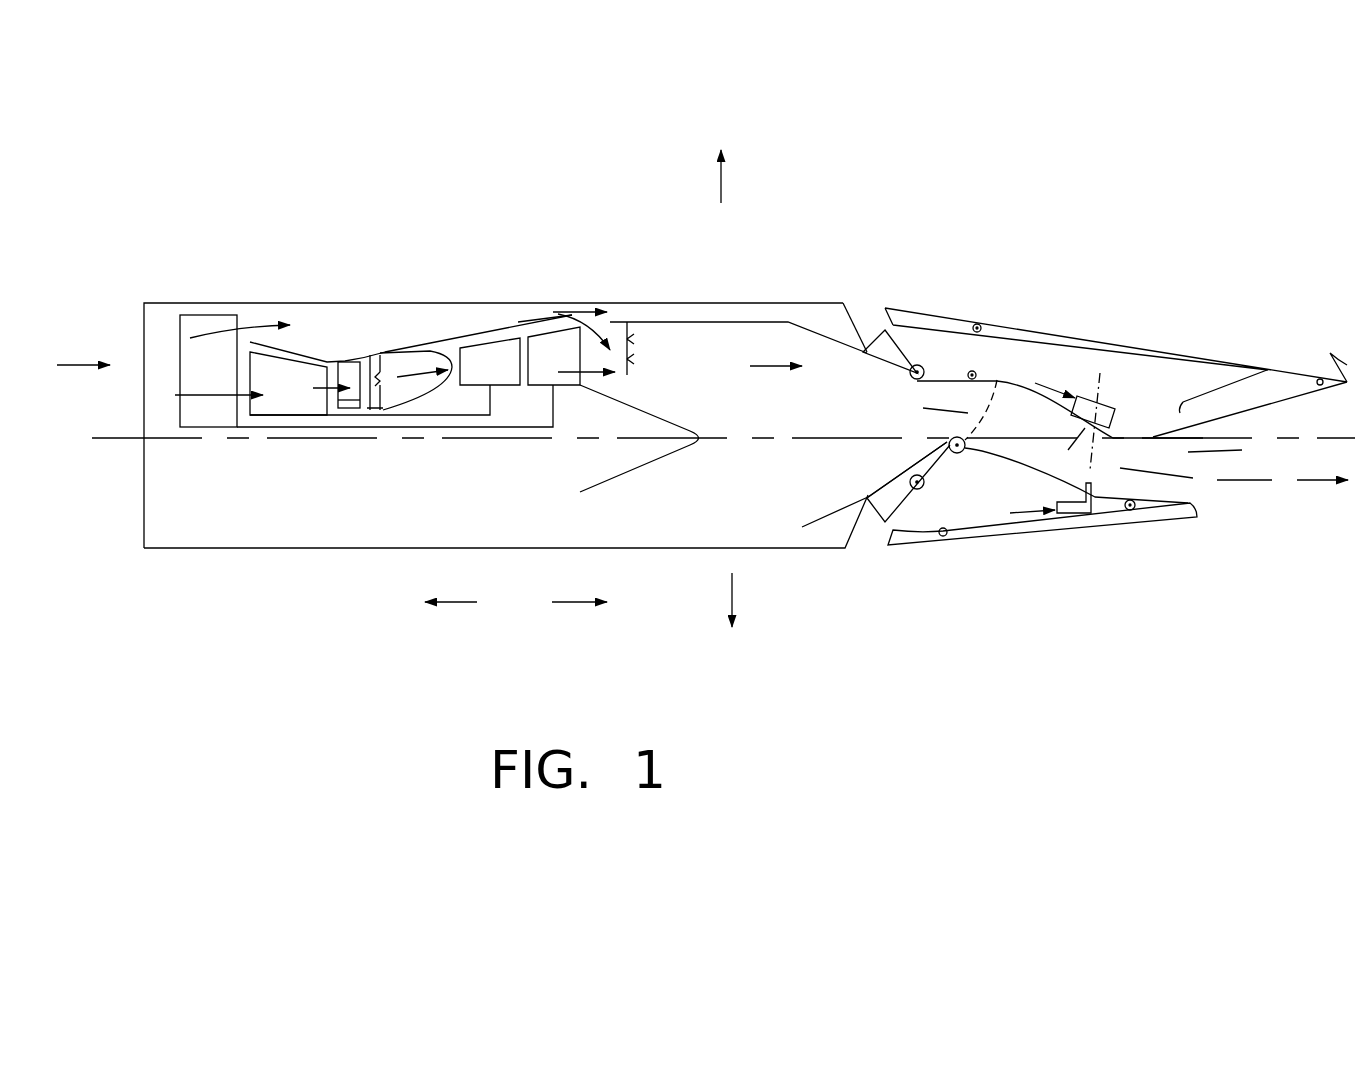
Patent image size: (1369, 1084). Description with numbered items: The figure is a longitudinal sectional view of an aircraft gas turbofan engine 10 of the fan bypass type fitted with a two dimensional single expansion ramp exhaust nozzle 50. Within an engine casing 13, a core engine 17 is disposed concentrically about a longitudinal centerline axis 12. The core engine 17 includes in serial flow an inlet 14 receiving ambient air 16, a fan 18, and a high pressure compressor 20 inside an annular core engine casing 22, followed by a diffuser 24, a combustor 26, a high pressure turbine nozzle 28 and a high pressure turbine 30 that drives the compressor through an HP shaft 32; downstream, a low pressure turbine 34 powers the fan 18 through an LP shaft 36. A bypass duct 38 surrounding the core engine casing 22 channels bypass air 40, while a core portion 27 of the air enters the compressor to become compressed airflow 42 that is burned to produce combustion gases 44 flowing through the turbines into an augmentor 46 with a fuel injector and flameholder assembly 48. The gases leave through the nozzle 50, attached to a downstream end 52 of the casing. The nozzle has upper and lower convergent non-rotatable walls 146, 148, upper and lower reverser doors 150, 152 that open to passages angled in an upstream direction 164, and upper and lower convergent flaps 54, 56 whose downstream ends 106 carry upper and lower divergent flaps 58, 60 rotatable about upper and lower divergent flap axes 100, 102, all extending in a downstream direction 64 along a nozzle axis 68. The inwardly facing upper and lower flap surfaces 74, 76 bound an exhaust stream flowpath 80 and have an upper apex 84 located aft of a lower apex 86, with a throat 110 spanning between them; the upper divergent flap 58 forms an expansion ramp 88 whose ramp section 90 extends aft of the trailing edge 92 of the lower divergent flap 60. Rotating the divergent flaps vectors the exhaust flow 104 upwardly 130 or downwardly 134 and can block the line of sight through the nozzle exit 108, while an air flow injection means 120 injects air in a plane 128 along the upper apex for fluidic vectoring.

The gas turbofan engine 10 is at (553, 222).
The longitudinal centerline axis 12 is at (127, 440).
The engine casing 13 is at (617, 303).
The inlet 14 is at (167, 305).
The ambient air 16 is at (77, 362).
The core engine 17 is at (303, 342).
The fan 18 is at (229, 370).
The high pressure compressor 20 is at (307, 394).
The core engine casing 22 is at (383, 355).
The diffuser 24 is at (347, 410).
The combustor 26 is at (382, 410).
The core portion 27 is at (208, 397).
The high pressure turbine nozzle 28 is at (437, 392).
The high pressure turbine 30 is at (507, 378).
The HP shaft 32 is at (453, 427).
The low pressure turbine 34 is at (565, 364).
The LP shaft 36 is at (523, 427).
The bypass duct 38 is at (357, 342).
The bypass air 40 is at (560, 310).
The compressed airflow 42 is at (323, 392).
The combustion gases 44 is at (410, 373).
The augmentor 46 is at (745, 425).
The fuel injector and flameholder assembly 48 is at (627, 375).
The exhaust nozzle 50 is at (1020, 292).
The downstream end 52 is at (822, 303).
The upper convergent flap 54 is at (937, 380).
The lower convergent flap 56 is at (930, 470).
The upper divergent flap 58 is at (998, 390).
The lower divergent flap 60 is at (1003, 457).
The downstream direction 64 is at (565, 602).
The nozzle axis 68 is at (1310, 433).
The upper flap surface 74 is at (1243, 413).
The lower flap surface 76 is at (1127, 497).
The exhaust stream flowpath 80 is at (1103, 372).
The upper apex 84 is at (1137, 432).
The lower apex 86 is at (952, 440).
The expansion ramp 88 is at (1255, 408).
The ramp section 90 is at (1268, 370).
The trailing edge 92 is at (1197, 520).
The upper divergent flap axis 100 is at (972, 368).
The lower divergent flap axis 102 is at (955, 458).
The exhaust flow 104 is at (1200, 453).
The downstream ends 106 is at (917, 380).
The nozzle exit 108 is at (1257, 467).
The throat 110 is at (1000, 426).
The air flow injection means 120 is at (1090, 385).
The plane 128 is at (1083, 473).
The upwardly 130 is at (722, 185).
The downwardly 134 is at (733, 585).
The upper convergent non-rotatable wall 146 is at (812, 335).
The lower convergent non-rotatable wall 148 is at (823, 515).
The upper reverser door 150 is at (792, 381).
The lower reverser door 152 is at (887, 497).
The upstream direction 164 is at (462, 603).